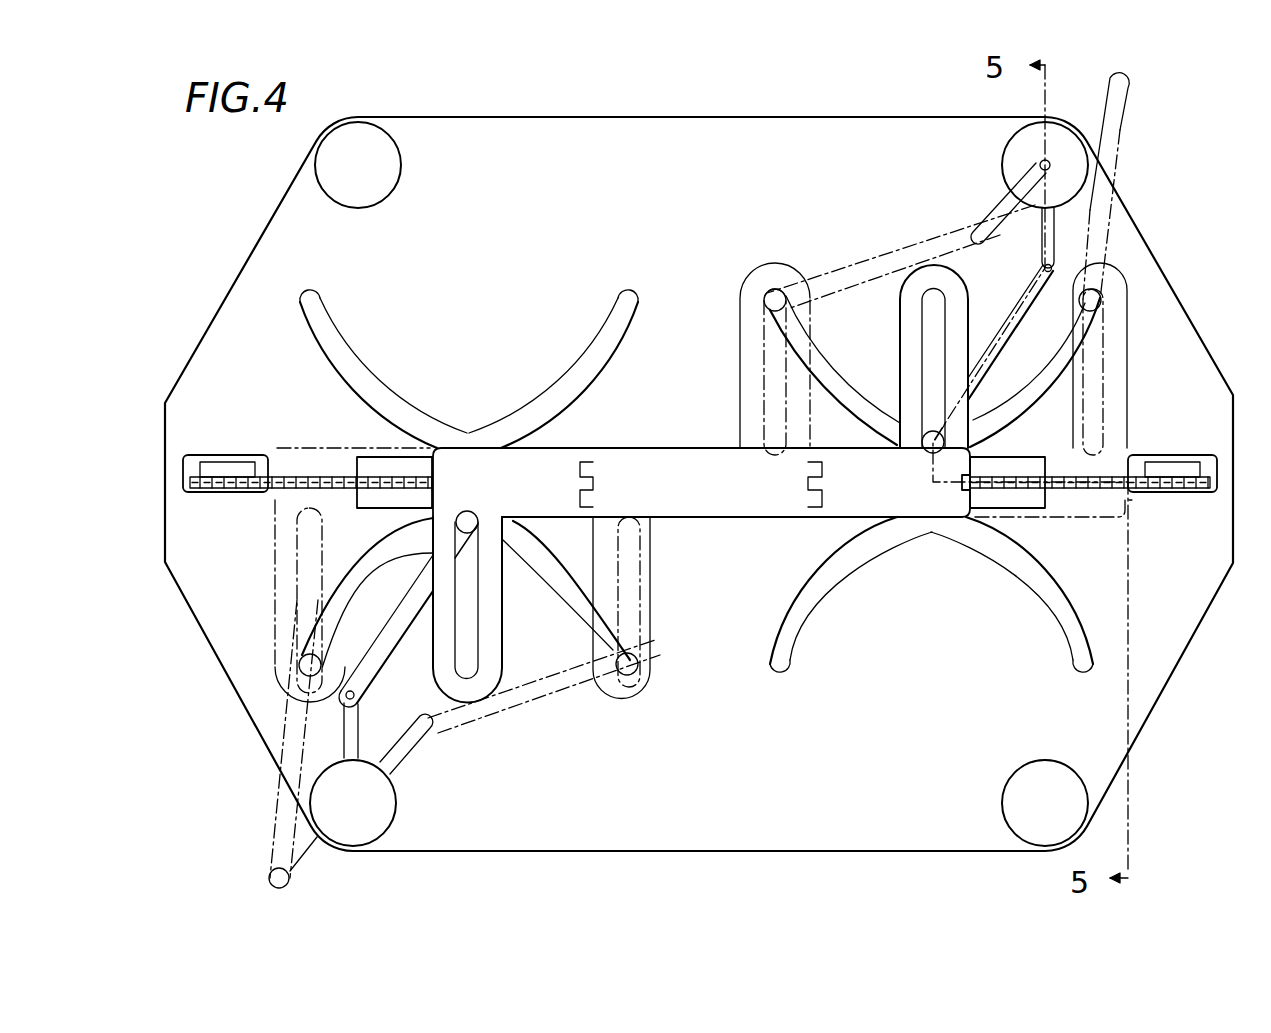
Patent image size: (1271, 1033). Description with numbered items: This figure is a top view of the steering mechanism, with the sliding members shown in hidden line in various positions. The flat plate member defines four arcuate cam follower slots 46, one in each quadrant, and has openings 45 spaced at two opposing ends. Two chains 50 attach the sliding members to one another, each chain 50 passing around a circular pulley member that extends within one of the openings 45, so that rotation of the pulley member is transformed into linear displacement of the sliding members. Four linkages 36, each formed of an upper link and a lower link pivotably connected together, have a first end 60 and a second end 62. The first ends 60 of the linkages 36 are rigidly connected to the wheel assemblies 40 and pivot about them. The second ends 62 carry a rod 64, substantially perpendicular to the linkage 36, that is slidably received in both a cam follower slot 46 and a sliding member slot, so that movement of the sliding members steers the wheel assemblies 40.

The wheel assembly 40 is at (388, 154).
The opening 45 is at (190, 462).
The chain 50 is at (193, 490).
The cam follower slot 46 is at (320, 302).
The second end 62 is at (438, 664).
The rod 64 is at (470, 514).
The linkage 36 is at (360, 722).
The first end 60 is at (344, 733).